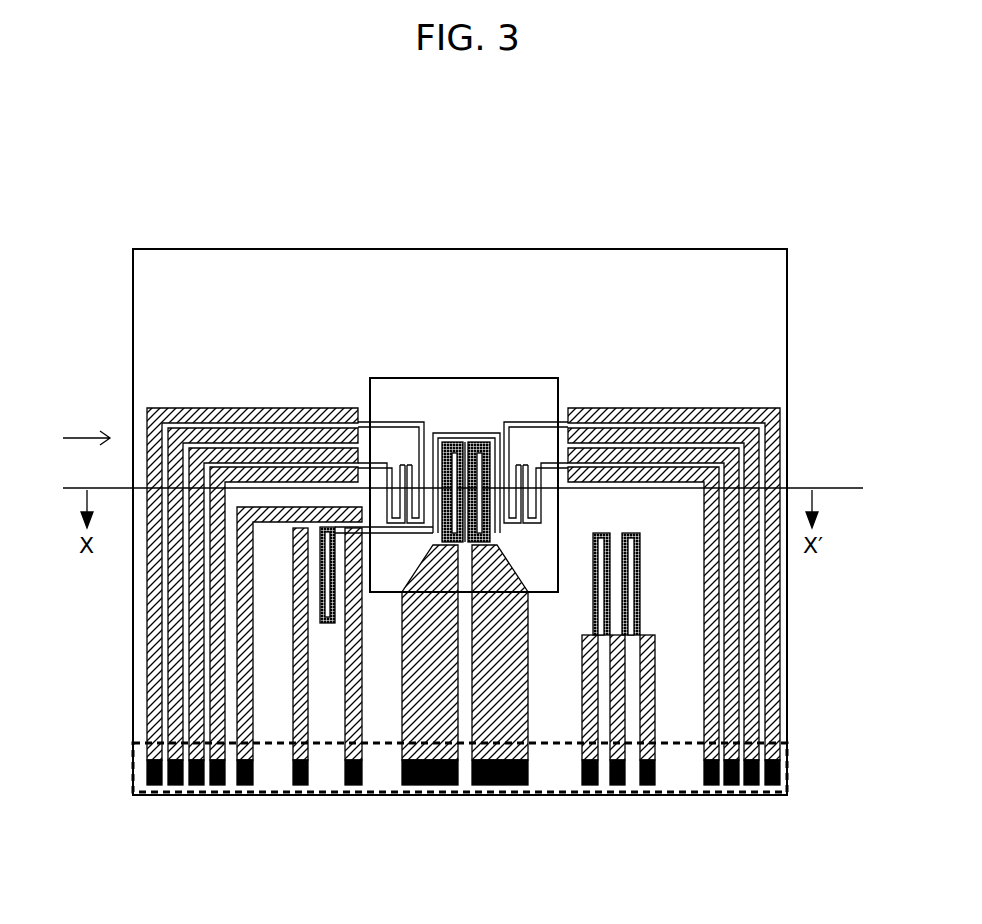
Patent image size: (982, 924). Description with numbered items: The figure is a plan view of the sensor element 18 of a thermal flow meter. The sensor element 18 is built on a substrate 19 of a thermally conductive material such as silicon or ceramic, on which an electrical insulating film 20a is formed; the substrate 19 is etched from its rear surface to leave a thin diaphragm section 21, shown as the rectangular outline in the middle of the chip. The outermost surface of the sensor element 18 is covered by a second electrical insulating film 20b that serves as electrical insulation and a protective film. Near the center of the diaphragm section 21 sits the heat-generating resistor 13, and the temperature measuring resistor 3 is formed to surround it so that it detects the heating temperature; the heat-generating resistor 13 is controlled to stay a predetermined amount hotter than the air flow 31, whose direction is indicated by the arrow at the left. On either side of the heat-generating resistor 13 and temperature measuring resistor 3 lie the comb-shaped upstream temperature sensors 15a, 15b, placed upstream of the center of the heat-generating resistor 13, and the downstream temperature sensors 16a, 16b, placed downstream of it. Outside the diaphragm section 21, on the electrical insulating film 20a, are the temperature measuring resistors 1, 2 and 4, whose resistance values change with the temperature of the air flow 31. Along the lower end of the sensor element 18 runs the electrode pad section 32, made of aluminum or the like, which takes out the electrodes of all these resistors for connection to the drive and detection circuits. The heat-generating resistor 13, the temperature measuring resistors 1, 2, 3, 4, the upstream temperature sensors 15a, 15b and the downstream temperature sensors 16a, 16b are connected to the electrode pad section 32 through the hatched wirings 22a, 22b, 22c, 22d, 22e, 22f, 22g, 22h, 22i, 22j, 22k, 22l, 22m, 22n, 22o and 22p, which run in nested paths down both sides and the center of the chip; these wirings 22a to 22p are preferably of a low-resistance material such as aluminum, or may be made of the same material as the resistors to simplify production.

The temperature measuring resistor 1 is at (638, 560).
The temperature measuring resistor 2 is at (610, 533).
The temperature measuring resistor 3 is at (466, 443).
The temperature measuring resistor 4 is at (327, 625).
The heat-generating resistor 13 is at (453, 440).
The upstream temperature sensor 15a is at (396, 440).
The upstream temperature sensor 15b is at (410, 440).
The downstream temperature sensor 16a is at (515, 440).
The downstream temperature sensor 16b is at (534, 440).
The sensor element 18 is at (173, 249).
The substrate 19 is at (298, 249).
The electrical insulating film 20a is at (352, 249).
The electrical insulating film 20b is at (407, 249).
The diaphragm section 21 is at (560, 383).
The wiring 22a is at (152, 596).
The wiring 22b is at (173, 630).
The wiring 22c is at (195, 663).
The wiring 22d is at (215, 698).
The wiring 22e is at (240, 707).
The wiring 22f is at (295, 710).
The wiring 22g is at (350, 715).
The wiring 22h is at (403, 720).
The wiring 22i is at (527, 720).
The wiring 22j is at (590, 710).
The wiring 22k is at (625, 715).
The wiring 22l is at (660, 715).
The wiring 22m is at (715, 700).
The wiring 22n is at (735, 665).
The wiring 22o is at (755, 632).
The wiring 22p is at (775, 596).
The air flow 31 is at (85, 437).
The electrode pad section 32 is at (680, 745).